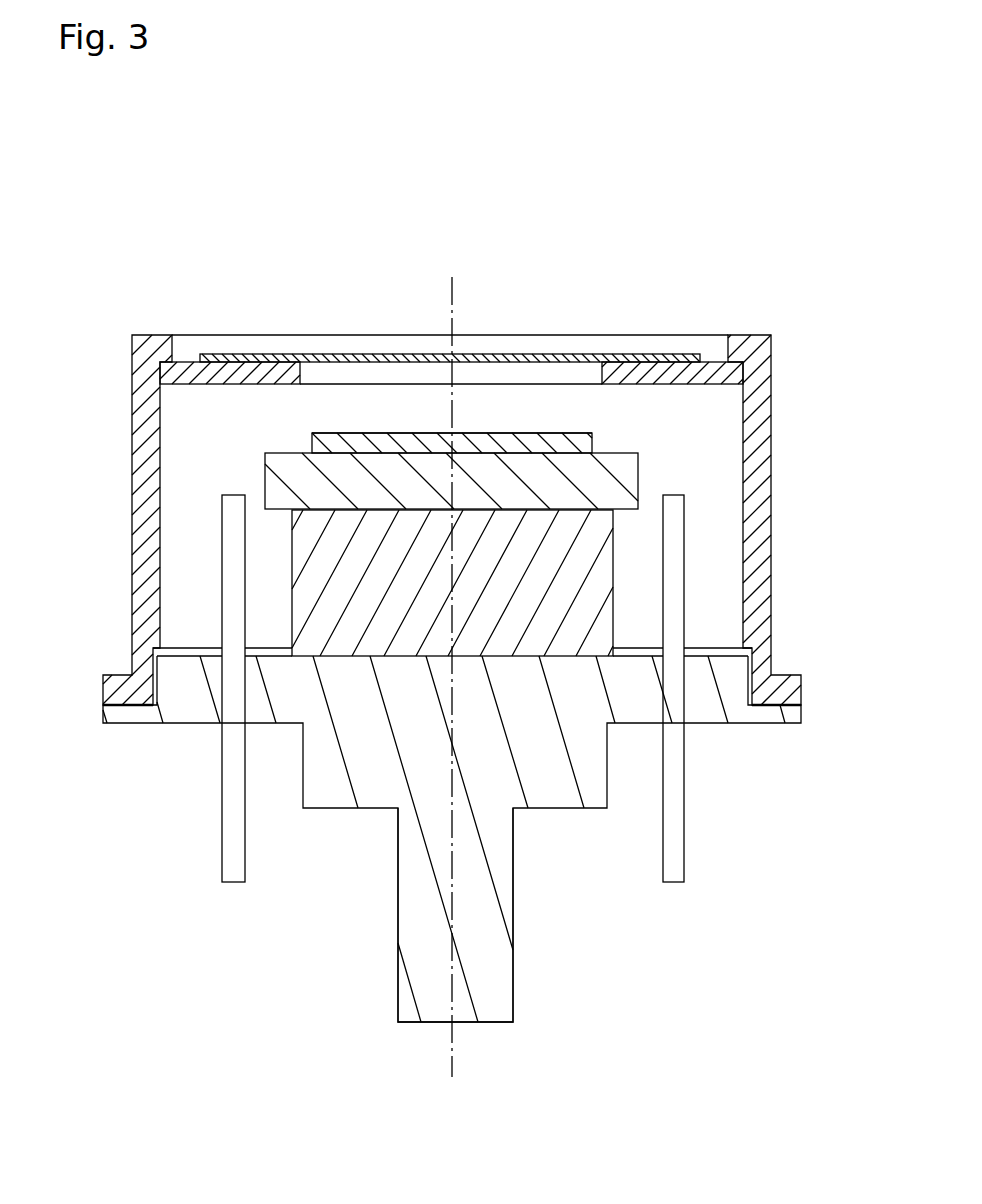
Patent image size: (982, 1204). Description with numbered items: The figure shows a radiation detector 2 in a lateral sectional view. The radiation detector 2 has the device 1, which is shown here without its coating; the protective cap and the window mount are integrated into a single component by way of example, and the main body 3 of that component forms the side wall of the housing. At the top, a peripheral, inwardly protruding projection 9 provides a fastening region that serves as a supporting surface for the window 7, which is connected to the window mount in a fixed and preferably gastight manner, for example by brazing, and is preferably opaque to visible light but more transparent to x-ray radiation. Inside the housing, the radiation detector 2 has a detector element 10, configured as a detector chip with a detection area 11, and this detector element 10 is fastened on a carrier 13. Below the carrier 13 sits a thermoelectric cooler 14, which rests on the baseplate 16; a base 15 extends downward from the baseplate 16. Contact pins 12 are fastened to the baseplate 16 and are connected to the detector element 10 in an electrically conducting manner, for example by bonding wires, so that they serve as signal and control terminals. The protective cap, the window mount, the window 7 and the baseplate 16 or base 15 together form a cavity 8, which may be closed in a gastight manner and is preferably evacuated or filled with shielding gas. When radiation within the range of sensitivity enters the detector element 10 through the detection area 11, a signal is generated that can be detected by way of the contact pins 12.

The device 1 is at (133, 407).
The radiation detector 2 is at (171, 198).
The main body 3 is at (147, 589).
The window 7 is at (393, 356).
The cavity 8 is at (219, 469).
The projection 9 is at (280, 378).
The detector element 10 is at (590, 436).
The detection area 11 is at (514, 433).
The contact pins 12 is at (680, 860).
The carrier 13 is at (640, 478).
The thermoelectric cooler 14 is at (580, 612).
The base 15 is at (503, 998).
The baseplate 16 is at (705, 707).